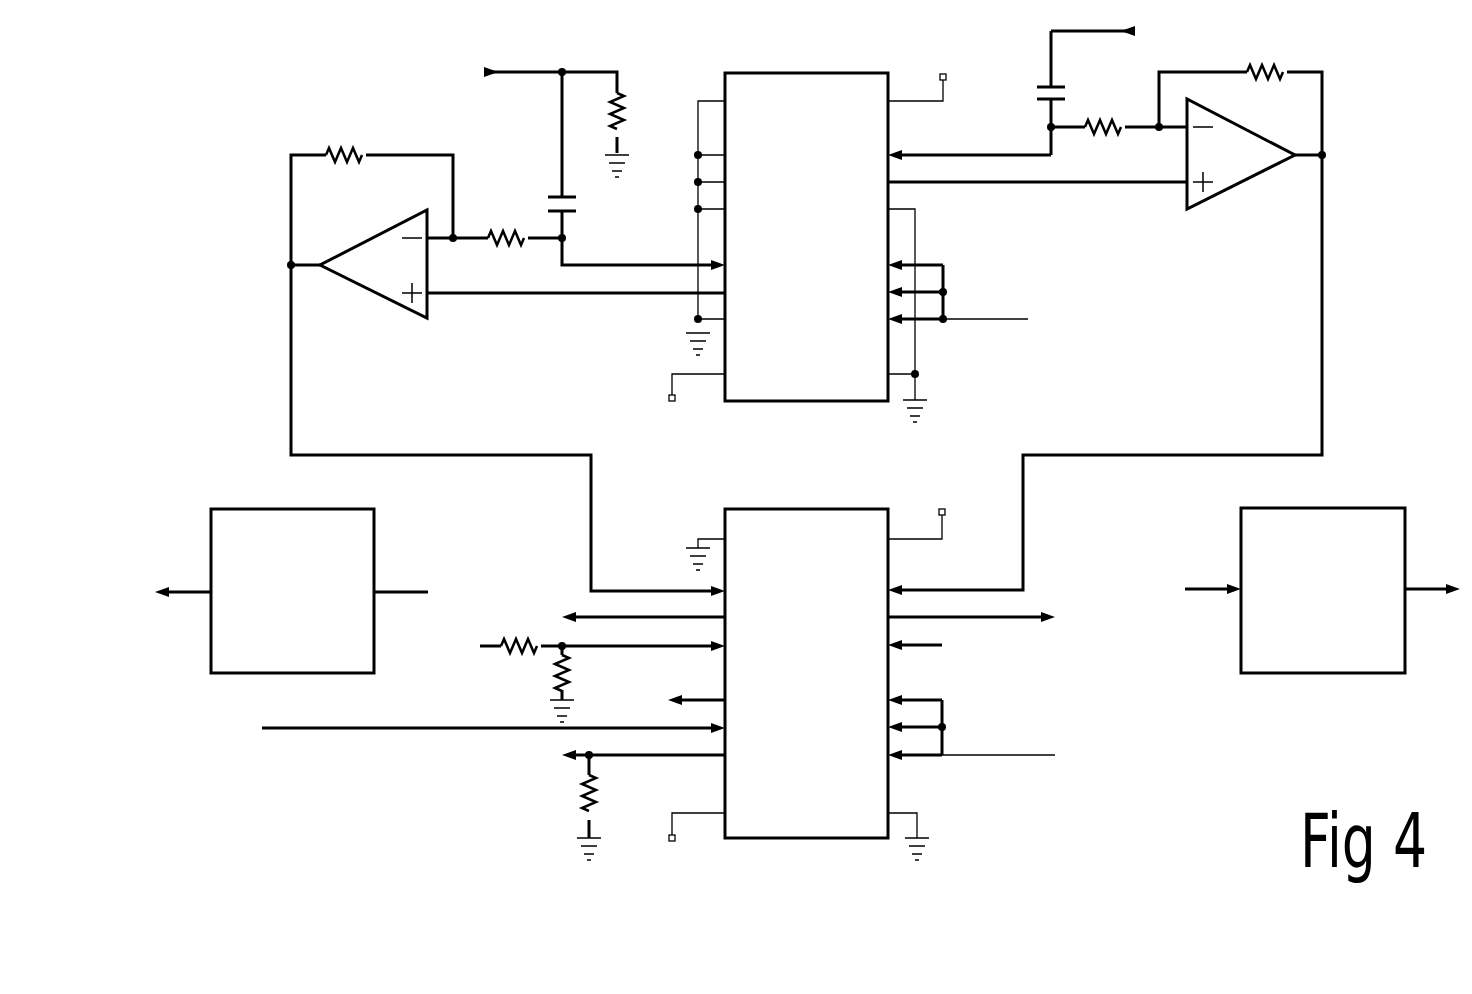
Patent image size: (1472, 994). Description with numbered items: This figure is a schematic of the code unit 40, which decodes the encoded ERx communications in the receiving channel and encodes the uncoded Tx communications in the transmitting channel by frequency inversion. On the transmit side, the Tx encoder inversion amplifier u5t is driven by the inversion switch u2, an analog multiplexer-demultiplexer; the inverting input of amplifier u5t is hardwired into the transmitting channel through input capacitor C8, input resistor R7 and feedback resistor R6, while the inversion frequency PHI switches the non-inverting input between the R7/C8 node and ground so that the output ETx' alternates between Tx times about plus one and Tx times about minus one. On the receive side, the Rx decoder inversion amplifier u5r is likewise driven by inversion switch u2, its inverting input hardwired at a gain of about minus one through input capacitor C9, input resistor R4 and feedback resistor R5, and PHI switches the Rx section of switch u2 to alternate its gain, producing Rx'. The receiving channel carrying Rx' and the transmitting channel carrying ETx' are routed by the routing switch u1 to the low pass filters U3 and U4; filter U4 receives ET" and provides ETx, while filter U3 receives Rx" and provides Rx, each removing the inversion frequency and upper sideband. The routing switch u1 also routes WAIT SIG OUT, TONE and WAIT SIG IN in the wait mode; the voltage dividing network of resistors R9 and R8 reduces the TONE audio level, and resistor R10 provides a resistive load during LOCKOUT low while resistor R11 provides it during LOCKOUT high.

The code unit 40 is at (805, 445).
The routing switch u1 is at (806, 673).
The inversion switch u2 is at (806, 237).
The low pass filter U3 is at (1323, 590).
The low pass filter U4 is at (292, 591).
The Rx decoder inversion amplifier u5r is at (373, 264).
The Tx encoder inversion amplifier u5t is at (1241, 154).
The input resistor R4 is at (506, 224).
The feedback resistor R5 is at (344, 168).
The feedback resistor R6 is at (1265, 84).
The input resistor R7 is at (1103, 113).
The voltage dividing resistor R8 is at (582, 673).
The voltage dividing resistor R9 is at (515, 659).
The resistor R10 is at (617, 796).
The resistor R11 is at (644, 115).
The input capacitor C8 is at (1030, 92).
The input capacitor C9 is at (582, 204).